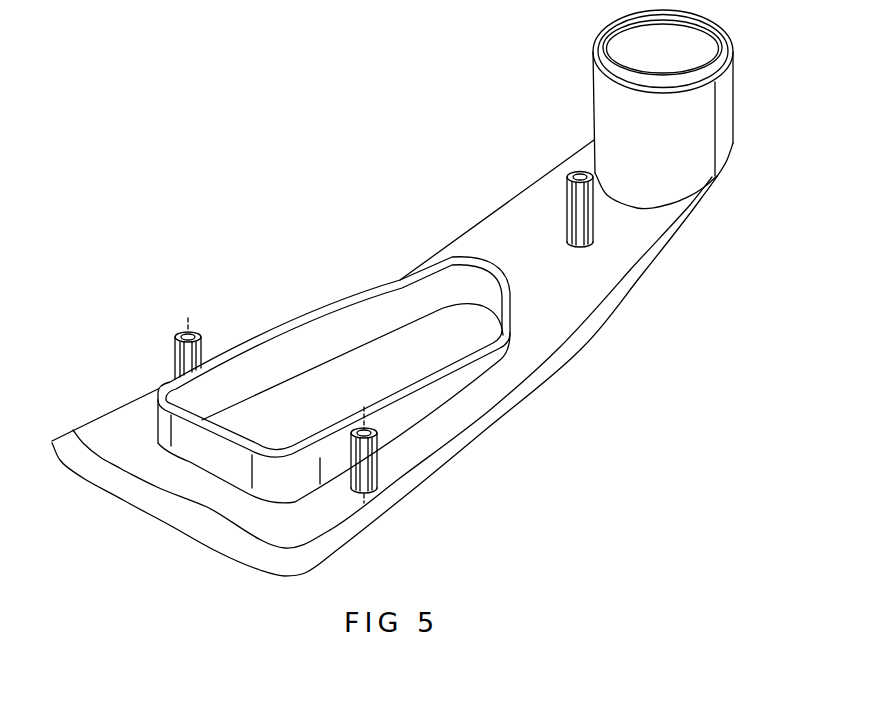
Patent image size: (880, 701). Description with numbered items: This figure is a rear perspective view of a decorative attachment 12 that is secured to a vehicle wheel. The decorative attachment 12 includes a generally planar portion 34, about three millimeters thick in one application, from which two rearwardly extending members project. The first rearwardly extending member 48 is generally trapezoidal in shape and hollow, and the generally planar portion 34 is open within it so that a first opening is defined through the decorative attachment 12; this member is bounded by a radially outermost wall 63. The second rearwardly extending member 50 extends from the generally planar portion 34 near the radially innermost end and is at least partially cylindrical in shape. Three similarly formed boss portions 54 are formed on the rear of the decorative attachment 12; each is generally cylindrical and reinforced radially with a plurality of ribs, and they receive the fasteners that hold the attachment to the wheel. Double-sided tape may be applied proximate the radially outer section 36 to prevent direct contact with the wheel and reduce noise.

The decorative attachment 12 is at (232, 217).
The generally planar portion 34 is at (583, 347).
The radially outer section 36 is at (192, 495).
The first rearwardly extending member 48 is at (443, 393).
The second rearwardly extending member 50 is at (723, 103).
The boss portions 54 is at (565, 202).
The radially outermost wall 63 is at (195, 418).